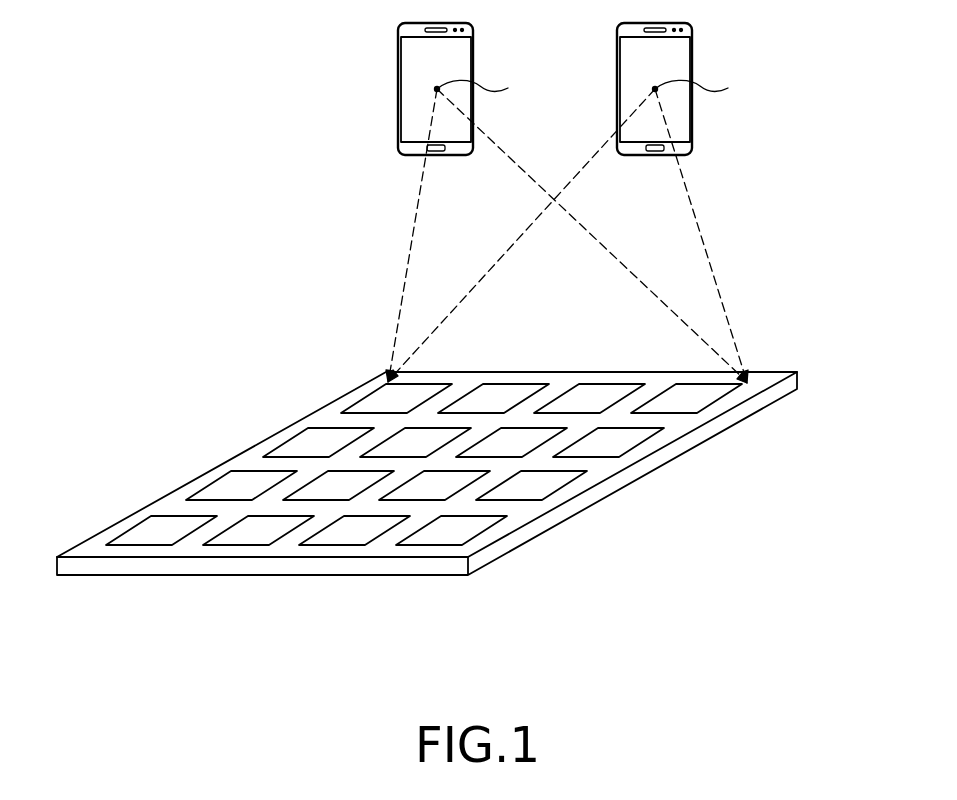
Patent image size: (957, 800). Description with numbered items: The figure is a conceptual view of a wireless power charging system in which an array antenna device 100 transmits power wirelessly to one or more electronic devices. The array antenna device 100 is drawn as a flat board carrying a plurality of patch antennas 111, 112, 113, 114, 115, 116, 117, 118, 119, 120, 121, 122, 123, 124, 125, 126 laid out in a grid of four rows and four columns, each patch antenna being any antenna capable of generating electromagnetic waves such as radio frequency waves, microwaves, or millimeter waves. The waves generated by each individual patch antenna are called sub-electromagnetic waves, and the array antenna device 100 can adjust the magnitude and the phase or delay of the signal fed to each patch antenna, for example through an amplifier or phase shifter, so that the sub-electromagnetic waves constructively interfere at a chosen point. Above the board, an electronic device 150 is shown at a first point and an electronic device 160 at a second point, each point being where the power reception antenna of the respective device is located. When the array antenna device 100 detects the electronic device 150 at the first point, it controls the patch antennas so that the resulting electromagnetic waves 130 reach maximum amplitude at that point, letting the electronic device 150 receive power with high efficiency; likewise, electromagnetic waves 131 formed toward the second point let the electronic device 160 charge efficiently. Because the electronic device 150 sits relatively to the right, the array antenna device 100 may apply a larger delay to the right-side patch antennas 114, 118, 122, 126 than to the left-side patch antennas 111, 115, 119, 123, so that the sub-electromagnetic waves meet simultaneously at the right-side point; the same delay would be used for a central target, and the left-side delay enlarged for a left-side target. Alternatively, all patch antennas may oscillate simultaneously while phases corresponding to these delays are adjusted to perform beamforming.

The array antenna device 100 is at (797, 372).
The patch antenna 111 is at (380, 395).
The patch antenna 112 is at (510, 393).
The patch antenna 113 is at (600, 393).
The patch antenna 114 is at (700, 397).
The patch antenna 115 is at (403, 447).
The patch antenna 116 is at (302, 442).
The patch antenna 117 is at (575, 428).
The patch antenna 118 is at (617, 443).
The patch antenna 119 is at (323, 488).
The patch antenna 120 is at (226, 488).
The patch antenna 121 is at (595, 468).
The patch antenna 122 is at (540, 488).
The patch antenna 123 is at (155, 532).
The patch antenna 124 is at (252, 533).
The patch antenna 125 is at (357, 533).
The patch antenna 126 is at (495, 528).
The electromagnetic waves 130 is at (686, 235).
The electromagnetic waves 131 is at (424, 232).
The electronic device 150 is at (692, 27).
The electronic device 160 is at (473, 27).